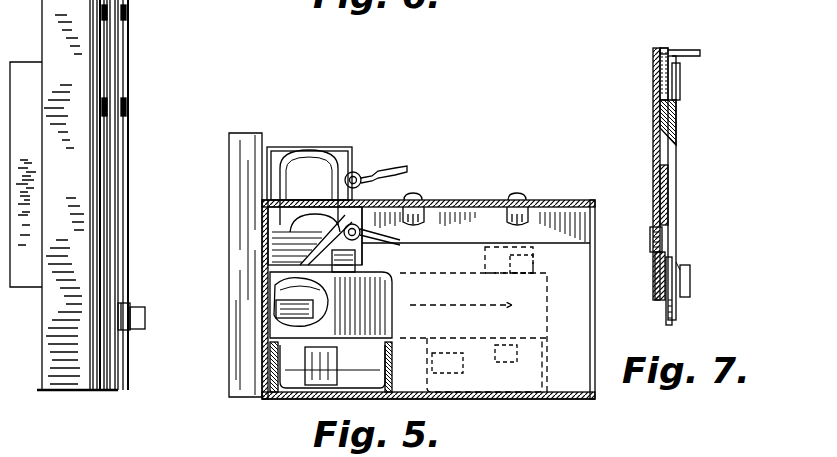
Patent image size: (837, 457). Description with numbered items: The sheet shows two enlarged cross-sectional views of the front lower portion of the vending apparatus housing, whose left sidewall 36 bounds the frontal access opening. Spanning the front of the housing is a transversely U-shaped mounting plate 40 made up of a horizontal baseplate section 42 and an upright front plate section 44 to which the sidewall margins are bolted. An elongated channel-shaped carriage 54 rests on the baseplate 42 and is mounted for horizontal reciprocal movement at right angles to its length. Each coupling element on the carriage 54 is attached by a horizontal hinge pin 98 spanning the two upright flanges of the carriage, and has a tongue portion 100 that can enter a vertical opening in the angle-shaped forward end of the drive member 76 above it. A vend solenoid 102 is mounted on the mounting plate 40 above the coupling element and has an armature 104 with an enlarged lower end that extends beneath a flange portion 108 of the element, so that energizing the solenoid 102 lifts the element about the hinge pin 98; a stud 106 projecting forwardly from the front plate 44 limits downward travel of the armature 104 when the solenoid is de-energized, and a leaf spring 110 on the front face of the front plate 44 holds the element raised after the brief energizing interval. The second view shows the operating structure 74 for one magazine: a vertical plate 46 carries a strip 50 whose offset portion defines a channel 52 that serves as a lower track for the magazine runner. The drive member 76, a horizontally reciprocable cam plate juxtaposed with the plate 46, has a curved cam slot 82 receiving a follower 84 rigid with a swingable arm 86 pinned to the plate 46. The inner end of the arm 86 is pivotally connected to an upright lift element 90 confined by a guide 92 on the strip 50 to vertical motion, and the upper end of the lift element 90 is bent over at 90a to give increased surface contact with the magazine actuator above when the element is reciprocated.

In FIG. 6, the left sidewall 36 is at (97, 383).
In FIG. 6, the operating structure 74 is at (134, 214).
In FIG. 6, the bent-over upper end 90a is at (128, 330).
In FIG. 7, the bent-over upper end 90a is at (698, 48).
In FIG. 5, the mounting plate 40 is at (565, 195).
In FIG. 5, the baseplate section 42 is at (518, 392).
In FIG. 5, the front plate section 44 is at (262, 241).
In FIG. 5, the carriage 54 is at (398, 340).
In FIG. 5, the drive member 76 is at (392, 298).
In FIG. 5, the hinge pin 98 is at (245, 279).
In FIG. 5, the tongue portion 100 is at (310, 393).
In FIG. 5, the vend solenoid 102 is at (318, 165).
In FIG. 5, the armature 104 is at (273, 287).
In FIG. 5, the stud 106 is at (272, 313).
In FIG. 5, the flange portion 108 is at (356, 262).
In FIG. 5, the leaf spring 110 is at (322, 205).
In FIG. 7, the plate 46 is at (653, 62).
In FIG. 7, the strip 50 is at (665, 76).
In FIG. 7, the channel 52 is at (661, 48).
In FIG. 7, the lift element 90 is at (677, 118).
In FIG. 7, the guide 92 is at (680, 85).
In FIG. 7, the follower 84 is at (650, 232).
In FIG. 7, the cam slot 82 is at (655, 265).
In FIG. 7, the swingable arm 86 is at (675, 318).